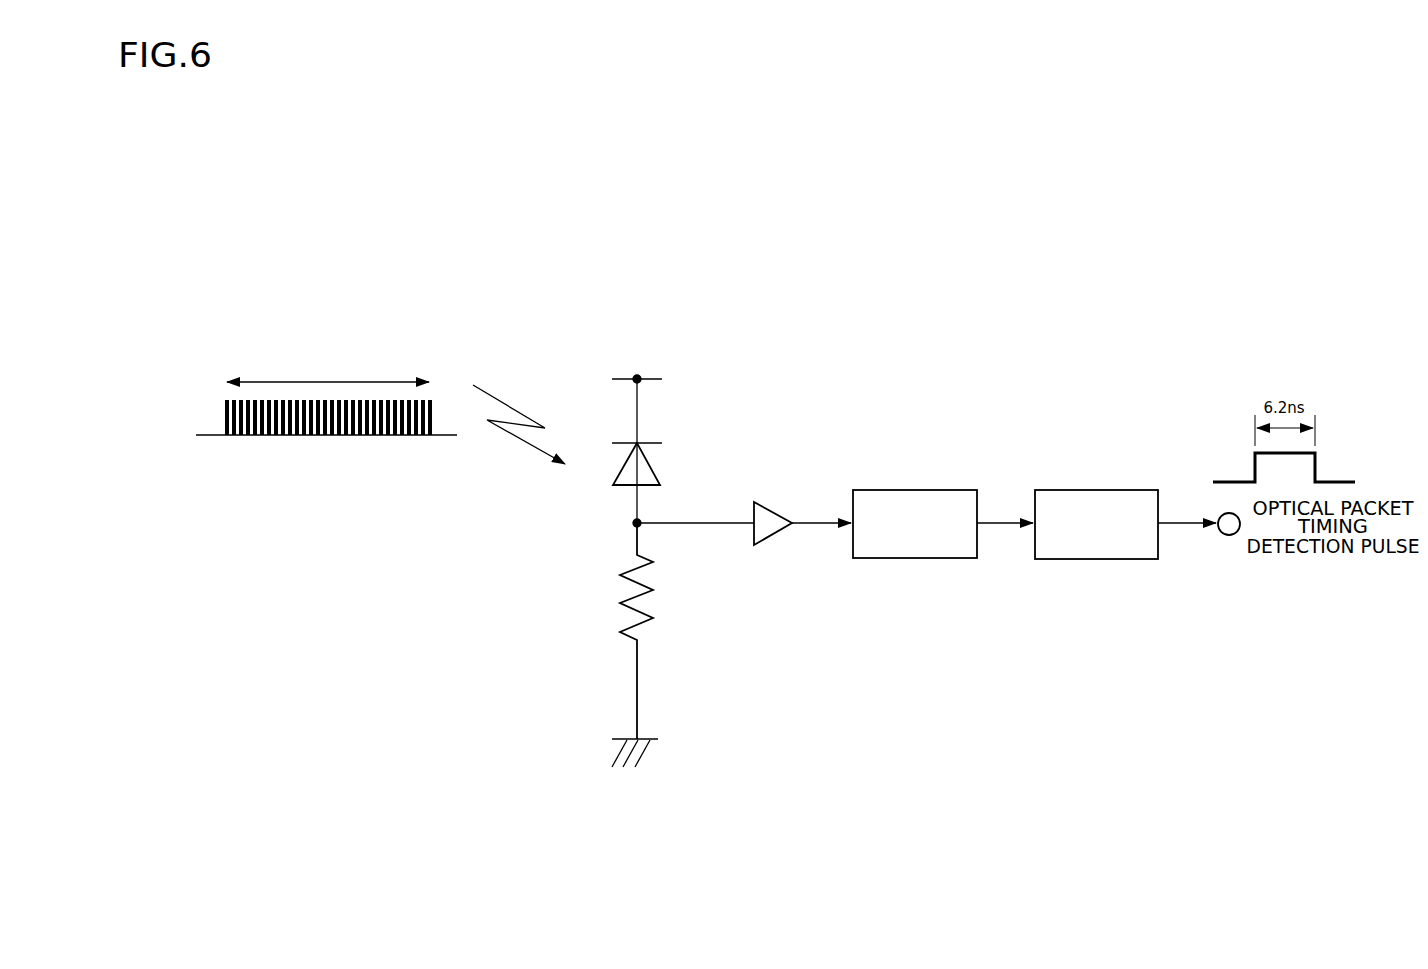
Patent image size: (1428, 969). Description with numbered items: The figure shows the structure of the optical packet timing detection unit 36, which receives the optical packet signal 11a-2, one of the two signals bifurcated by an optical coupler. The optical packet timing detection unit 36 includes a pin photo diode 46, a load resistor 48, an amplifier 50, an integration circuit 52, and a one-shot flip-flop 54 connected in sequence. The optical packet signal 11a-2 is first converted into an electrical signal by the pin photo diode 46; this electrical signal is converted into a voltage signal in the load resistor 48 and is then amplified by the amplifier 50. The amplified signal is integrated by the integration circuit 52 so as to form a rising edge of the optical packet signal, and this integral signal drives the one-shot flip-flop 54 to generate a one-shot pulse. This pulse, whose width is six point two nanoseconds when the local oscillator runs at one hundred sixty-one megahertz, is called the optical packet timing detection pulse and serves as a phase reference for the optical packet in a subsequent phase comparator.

The optical packet signal 11a-2 is at (374, 340).
The optical packet timing detection unit 36 is at (877, 362).
The pin photo diode 46 is at (652, 443).
The load resistor 48 is at (652, 587).
The amplifier 50 is at (773, 512).
The integration circuit 52 is at (945, 490).
The one-shot flip-flop 54 is at (1130, 490).